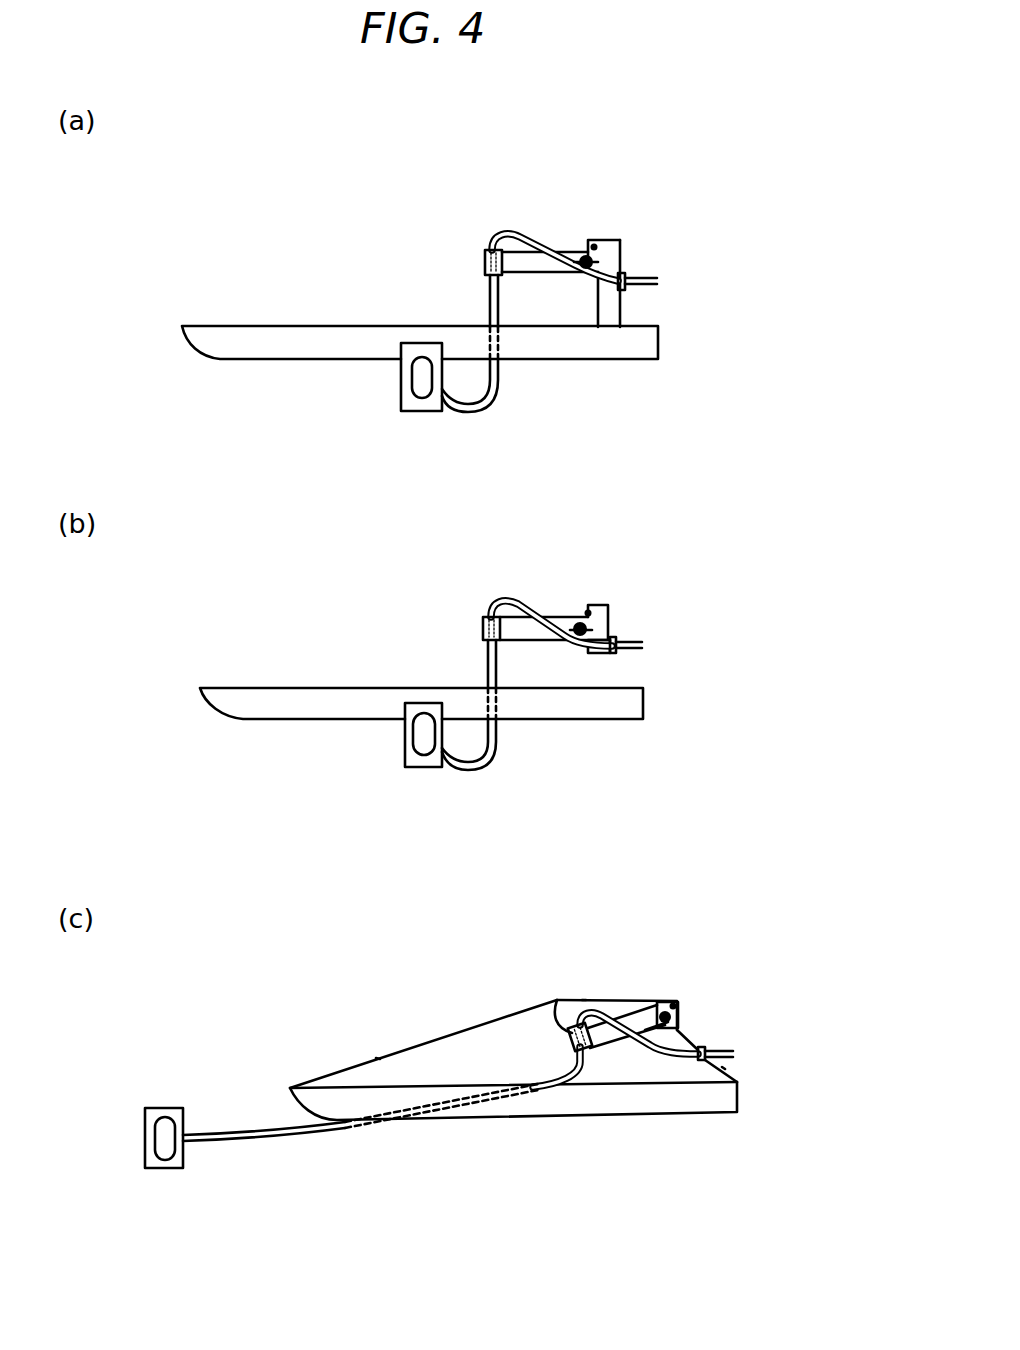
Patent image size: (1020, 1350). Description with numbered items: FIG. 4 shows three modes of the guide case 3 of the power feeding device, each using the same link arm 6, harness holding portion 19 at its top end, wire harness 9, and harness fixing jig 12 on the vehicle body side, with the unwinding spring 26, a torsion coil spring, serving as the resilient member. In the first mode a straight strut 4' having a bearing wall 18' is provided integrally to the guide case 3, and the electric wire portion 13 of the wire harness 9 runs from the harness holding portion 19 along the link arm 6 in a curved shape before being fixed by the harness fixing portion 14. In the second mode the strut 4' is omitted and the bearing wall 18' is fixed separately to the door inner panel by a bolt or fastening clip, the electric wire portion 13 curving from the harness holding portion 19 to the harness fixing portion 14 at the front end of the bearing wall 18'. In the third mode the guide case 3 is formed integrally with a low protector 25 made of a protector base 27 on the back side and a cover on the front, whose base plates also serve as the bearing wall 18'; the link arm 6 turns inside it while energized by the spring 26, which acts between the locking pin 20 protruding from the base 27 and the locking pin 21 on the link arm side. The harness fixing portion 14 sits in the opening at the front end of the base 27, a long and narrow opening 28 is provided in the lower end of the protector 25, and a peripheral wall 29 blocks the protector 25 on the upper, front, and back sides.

The guide case 3 is at (318, 326).
The strut 4' is at (655, 283).
The link arm 6 is at (528, 274).
The wire harness 9 is at (506, 380).
The harness fixing jig 12 is at (423, 411).
The electric wire portion 13 is at (660, 278).
The harness fixing portion 14 is at (626, 272).
The bearing wall 18' is at (628, 591).
The harness holding portion 19 is at (486, 250).
The locking pin 20 is at (596, 242).
The locking pin 21 is at (572, 264).
The protector 25 is at (488, 1016).
The unwinding spring 26 is at (612, 255).
The protector base 27 is at (450, 1060).
The long and narrow opening 28 is at (570, 1105).
The peripheral wall 29 is at (378, 1058).